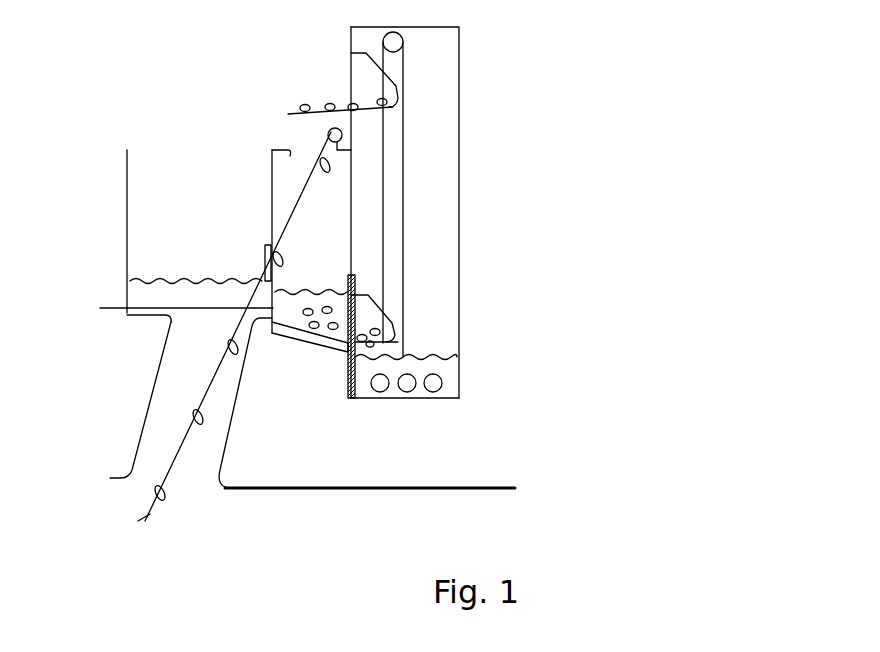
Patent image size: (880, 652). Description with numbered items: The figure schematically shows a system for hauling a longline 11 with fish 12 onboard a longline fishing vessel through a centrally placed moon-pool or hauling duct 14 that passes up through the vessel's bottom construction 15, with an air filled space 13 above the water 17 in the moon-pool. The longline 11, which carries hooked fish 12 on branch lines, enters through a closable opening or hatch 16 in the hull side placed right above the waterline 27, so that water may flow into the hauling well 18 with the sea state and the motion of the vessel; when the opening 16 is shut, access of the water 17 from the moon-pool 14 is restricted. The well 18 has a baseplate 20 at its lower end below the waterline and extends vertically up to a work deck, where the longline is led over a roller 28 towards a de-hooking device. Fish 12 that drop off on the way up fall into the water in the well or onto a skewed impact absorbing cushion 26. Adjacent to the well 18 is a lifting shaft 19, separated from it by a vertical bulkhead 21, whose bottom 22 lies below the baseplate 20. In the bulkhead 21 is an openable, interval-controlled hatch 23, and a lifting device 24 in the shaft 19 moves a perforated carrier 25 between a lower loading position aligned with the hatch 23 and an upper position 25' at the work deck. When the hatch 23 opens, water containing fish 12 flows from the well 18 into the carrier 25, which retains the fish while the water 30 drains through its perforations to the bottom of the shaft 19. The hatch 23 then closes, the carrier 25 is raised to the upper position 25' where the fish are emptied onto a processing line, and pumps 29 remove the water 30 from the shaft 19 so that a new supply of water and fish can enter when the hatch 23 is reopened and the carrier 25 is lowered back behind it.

The longline 11 is at (146, 500).
The fish 12 is at (166, 503).
The air filled space above moon-pool 13 is at (178, 203).
The moon-pool or hauling duct 14 is at (199, 378).
The bottom construction of the vessel 15 is at (97, 480).
The opening or hatch in the hull side 16 is at (261, 253).
The water in the moon-pool 17 is at (175, 293).
The hauling well 18 is at (320, 208).
The lifting shaft 19 is at (442, 310).
The baseplate 20 is at (292, 343).
The vertical bulkhead 21 is at (357, 167).
The bottom of lift shaft 22 is at (450, 398).
The hatch in bulkhead 23 is at (105, 310).
The lifting device 24 is at (409, 257).
The carrier 25 is at (434, 329).
The upper position of carrier 25' is at (409, 83).
The impact absorbing cushion 26 is at (315, 343).
The waterline 27 is at (213, 277).
The roller 28 is at (326, 129).
The pumps 29 is at (409, 400).
The water in shaft 30 is at (437, 362).